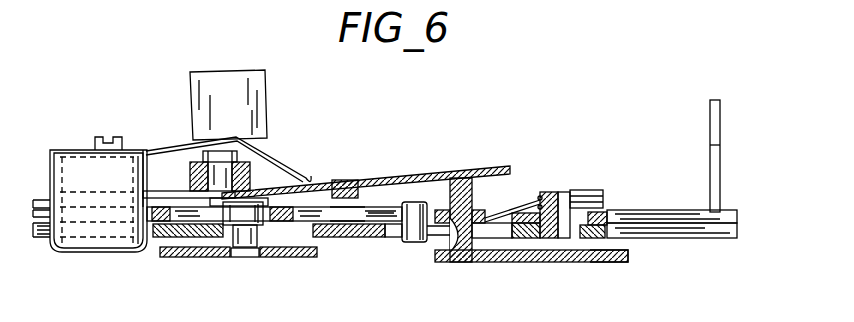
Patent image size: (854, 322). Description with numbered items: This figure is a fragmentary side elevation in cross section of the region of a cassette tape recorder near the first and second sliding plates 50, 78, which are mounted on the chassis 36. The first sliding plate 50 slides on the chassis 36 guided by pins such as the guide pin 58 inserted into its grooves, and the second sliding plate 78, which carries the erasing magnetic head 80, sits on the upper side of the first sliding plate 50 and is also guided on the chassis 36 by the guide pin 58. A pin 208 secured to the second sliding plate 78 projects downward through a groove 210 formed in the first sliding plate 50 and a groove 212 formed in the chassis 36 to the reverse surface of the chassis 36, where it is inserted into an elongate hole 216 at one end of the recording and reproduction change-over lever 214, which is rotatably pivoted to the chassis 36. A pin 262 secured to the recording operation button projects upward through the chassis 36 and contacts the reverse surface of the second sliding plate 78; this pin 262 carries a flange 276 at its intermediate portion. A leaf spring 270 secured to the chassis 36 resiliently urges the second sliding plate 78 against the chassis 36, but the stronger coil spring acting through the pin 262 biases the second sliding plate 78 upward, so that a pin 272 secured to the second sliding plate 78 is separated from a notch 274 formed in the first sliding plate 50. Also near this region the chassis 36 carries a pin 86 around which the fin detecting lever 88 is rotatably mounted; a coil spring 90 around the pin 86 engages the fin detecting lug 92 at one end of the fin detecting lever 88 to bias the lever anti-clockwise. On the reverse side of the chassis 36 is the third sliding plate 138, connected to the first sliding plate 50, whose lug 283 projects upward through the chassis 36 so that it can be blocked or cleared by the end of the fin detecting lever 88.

The guide pin 58 is at (95, 141).
The leaf spring 270 is at (158, 150).
The erasing magnetic head 80 is at (221, 80).
The pin 272 is at (340, 180).
The notch 274 is at (352, 207).
The first sliding plate 50 is at (388, 212).
The second sliding plate 78 is at (443, 167).
The pin 86 is at (588, 190).
The coil spring 90 is at (637, 210).
The fin detecting lug 92 is at (710, 120).
The groove 210 is at (162, 236).
The recording and reproduction change-over lever 214 is at (165, 257).
The elongate hole 216 is at (233, 257).
The pin 208 is at (247, 257).
The groove 212 is at (302, 257).
The chassis 36 is at (312, 232).
The lug 283 is at (413, 243).
The flange 276 is at (453, 262).
The pin 262 is at (477, 262).
The fin detecting lever 88 is at (543, 238).
The third sliding plate 138 is at (610, 262).